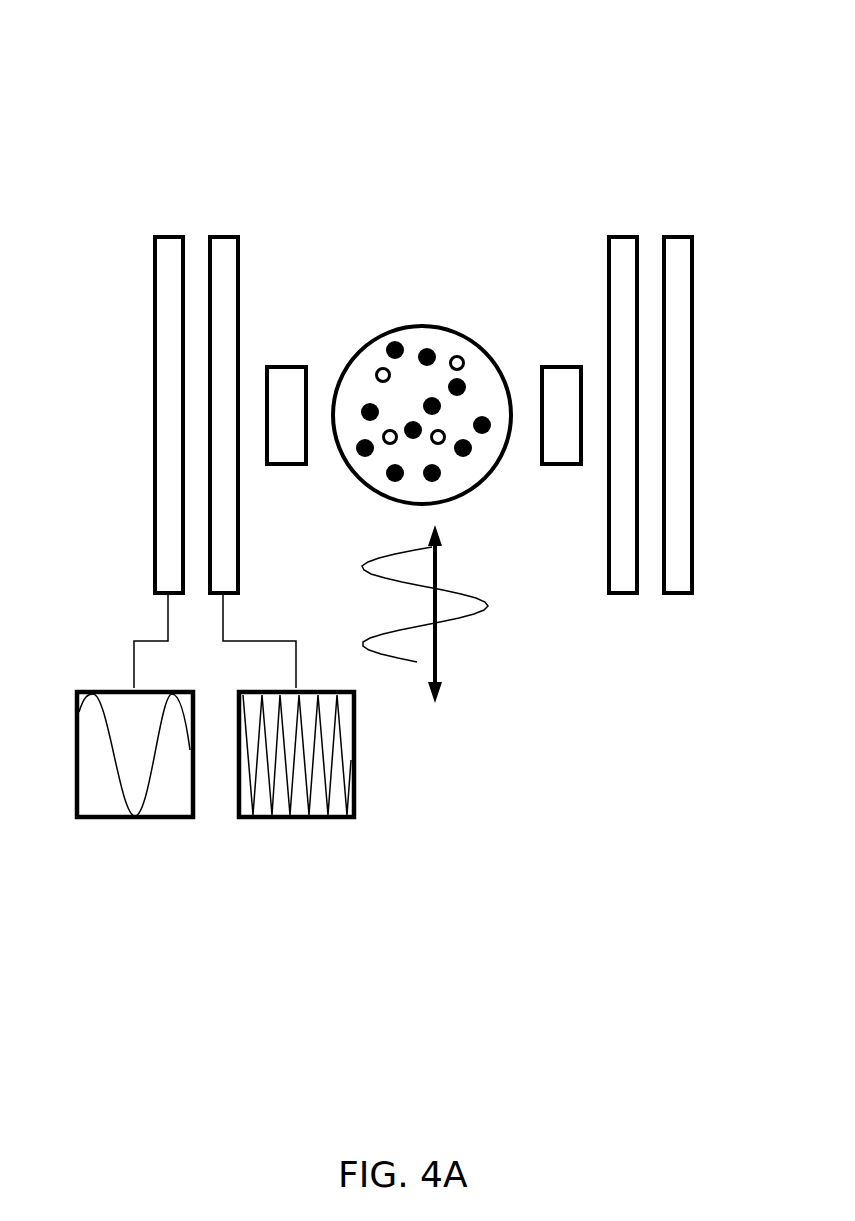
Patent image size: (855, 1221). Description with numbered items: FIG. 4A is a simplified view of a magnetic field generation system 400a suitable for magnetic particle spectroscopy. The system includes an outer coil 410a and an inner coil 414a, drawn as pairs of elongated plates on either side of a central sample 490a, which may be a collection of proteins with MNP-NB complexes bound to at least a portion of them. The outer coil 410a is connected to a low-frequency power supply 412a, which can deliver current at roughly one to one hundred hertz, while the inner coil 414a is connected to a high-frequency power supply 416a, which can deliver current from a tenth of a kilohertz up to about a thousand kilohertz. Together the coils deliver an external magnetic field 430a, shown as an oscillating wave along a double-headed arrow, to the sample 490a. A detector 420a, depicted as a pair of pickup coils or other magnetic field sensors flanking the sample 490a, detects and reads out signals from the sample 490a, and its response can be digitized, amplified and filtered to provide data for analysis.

The magnetic field generation system 400a is at (428, 96).
The outer coil 410a is at (169, 236).
The inner coil 414a is at (224, 236).
The low-frequency power supply 412a is at (138, 818).
The high-frequency power supply 416a is at (297, 818).
The detector 420a is at (560, 366).
The sample 490a is at (423, 325).
The external magnetic field 430a is at (370, 638).